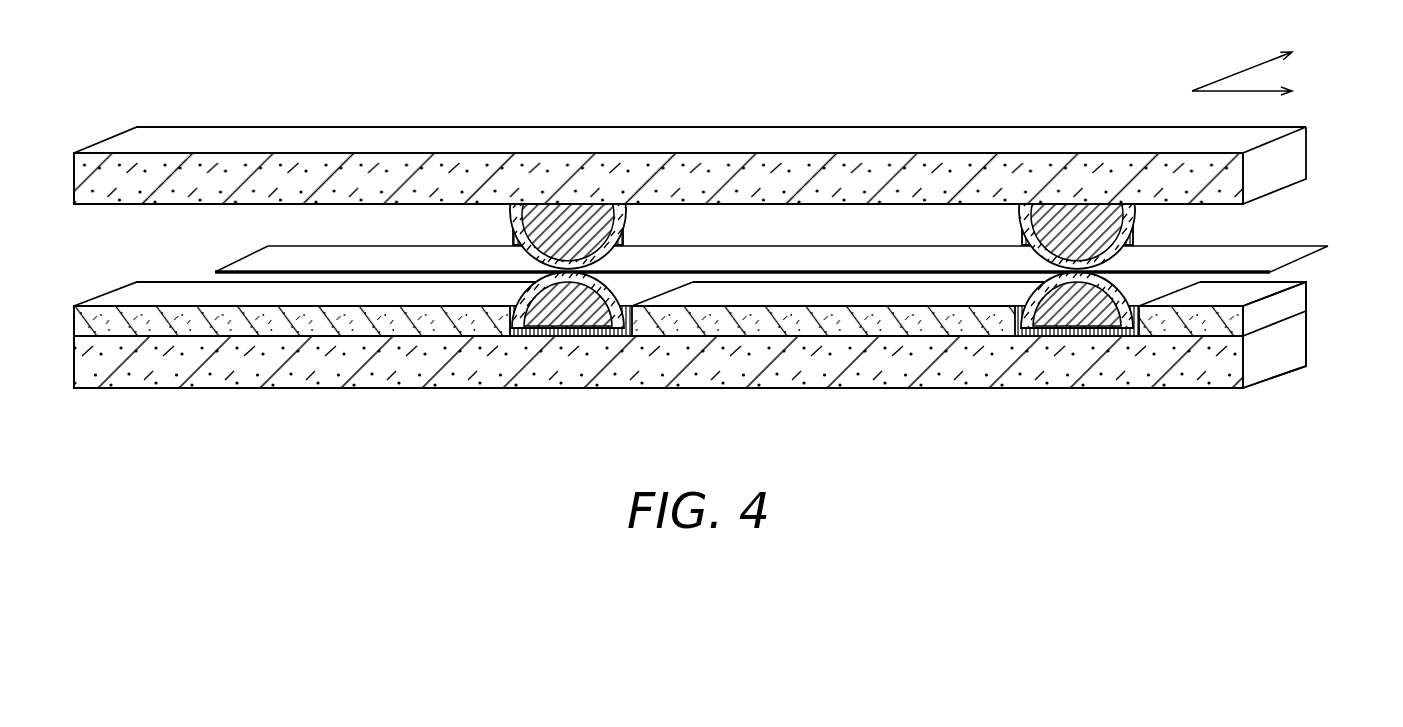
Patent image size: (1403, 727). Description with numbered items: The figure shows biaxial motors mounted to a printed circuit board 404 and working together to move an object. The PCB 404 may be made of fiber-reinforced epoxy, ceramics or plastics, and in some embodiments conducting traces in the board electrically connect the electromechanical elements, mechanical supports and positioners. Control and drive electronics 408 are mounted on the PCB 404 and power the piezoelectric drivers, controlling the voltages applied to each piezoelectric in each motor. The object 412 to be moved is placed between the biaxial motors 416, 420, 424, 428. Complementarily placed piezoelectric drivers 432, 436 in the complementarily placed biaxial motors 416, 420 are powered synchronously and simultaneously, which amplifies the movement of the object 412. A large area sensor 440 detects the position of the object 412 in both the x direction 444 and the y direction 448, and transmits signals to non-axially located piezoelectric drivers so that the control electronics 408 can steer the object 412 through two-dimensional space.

The printed circuit board 404 is at (190, 387).
The control and drive electronics 408 is at (193, 298).
The object 412 is at (260, 258).
The biaxial motor 416 is at (641, 278).
The biaxial motor 420 is at (493, 218).
The biaxial motor 424 is at (1145, 283).
The biaxial motor 428 is at (1013, 218).
The piezoelectric driver 432 is at (538, 220).
The piezoelectric driver 436 is at (540, 322).
The large area sensor 440 is at (1295, 307).
The x direction 444 is at (1220, 91).
The y direction 448 is at (1250, 68).